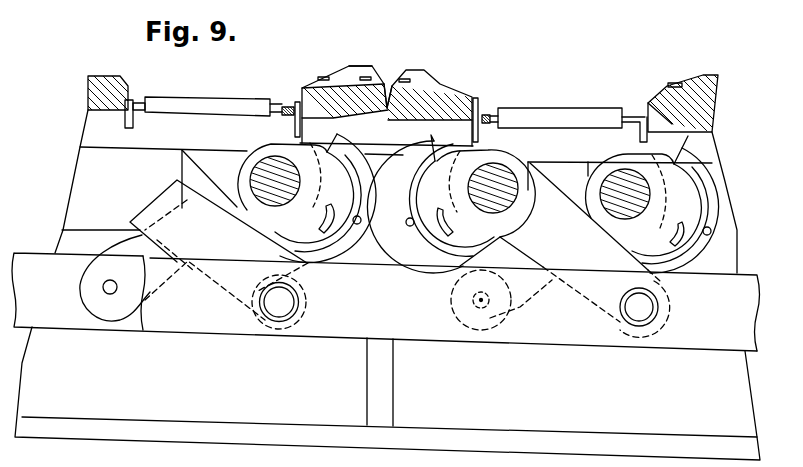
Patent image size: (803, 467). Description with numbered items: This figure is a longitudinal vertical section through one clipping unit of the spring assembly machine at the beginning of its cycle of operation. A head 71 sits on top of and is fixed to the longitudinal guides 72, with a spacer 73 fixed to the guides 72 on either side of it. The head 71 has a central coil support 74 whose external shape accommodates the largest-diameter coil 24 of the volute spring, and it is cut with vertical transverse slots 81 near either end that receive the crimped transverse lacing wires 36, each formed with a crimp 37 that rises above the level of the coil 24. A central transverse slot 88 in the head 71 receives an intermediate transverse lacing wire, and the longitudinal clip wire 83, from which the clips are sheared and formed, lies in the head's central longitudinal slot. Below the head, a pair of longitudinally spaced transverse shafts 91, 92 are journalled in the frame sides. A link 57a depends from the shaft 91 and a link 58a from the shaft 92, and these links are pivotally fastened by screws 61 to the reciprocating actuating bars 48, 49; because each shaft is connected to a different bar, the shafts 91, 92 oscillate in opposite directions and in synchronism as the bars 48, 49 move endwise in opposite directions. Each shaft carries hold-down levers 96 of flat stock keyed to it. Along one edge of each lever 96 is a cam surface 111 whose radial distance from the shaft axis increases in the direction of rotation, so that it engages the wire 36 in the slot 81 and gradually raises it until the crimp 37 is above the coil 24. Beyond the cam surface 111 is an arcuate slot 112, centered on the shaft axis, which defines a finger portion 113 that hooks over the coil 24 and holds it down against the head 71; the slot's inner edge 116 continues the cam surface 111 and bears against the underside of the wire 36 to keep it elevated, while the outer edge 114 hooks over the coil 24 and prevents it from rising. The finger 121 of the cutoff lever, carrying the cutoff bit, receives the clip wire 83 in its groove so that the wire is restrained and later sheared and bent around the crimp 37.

The largest-diameter coil 24 is at (285, 106).
The lacing wire 36 is at (300, 130).
The crimp 37 is at (296, 103).
The actuating bar 48 is at (442, 325).
The actuating bar 49 is at (70, 318).
The link 57a is at (138, 248).
The link 58a is at (168, 206).
The screw 61 is at (110, 288).
The head 71 is at (97, 70).
The longitudinal guide 72 is at (149, 190).
The spacer 73 is at (183, 100).
The central coil support 74 is at (360, 66).
The vertical slot 81 is at (131, 112).
The longitudinal wire 83 is at (141, 101).
The transverse central slot 88 is at (386, 107).
The transverse shaft 91 is at (258, 178).
The transverse shaft 92 is at (558, 177).
The hold-down lever 96 is at (305, 243).
The cam surface 111 is at (320, 152).
The arcuate slot 112 is at (417, 173).
The finger portion 113 is at (424, 147).
The outer edge 114 is at (353, 208).
The inner edge 116 is at (330, 213).
The finger 121 is at (410, 241).